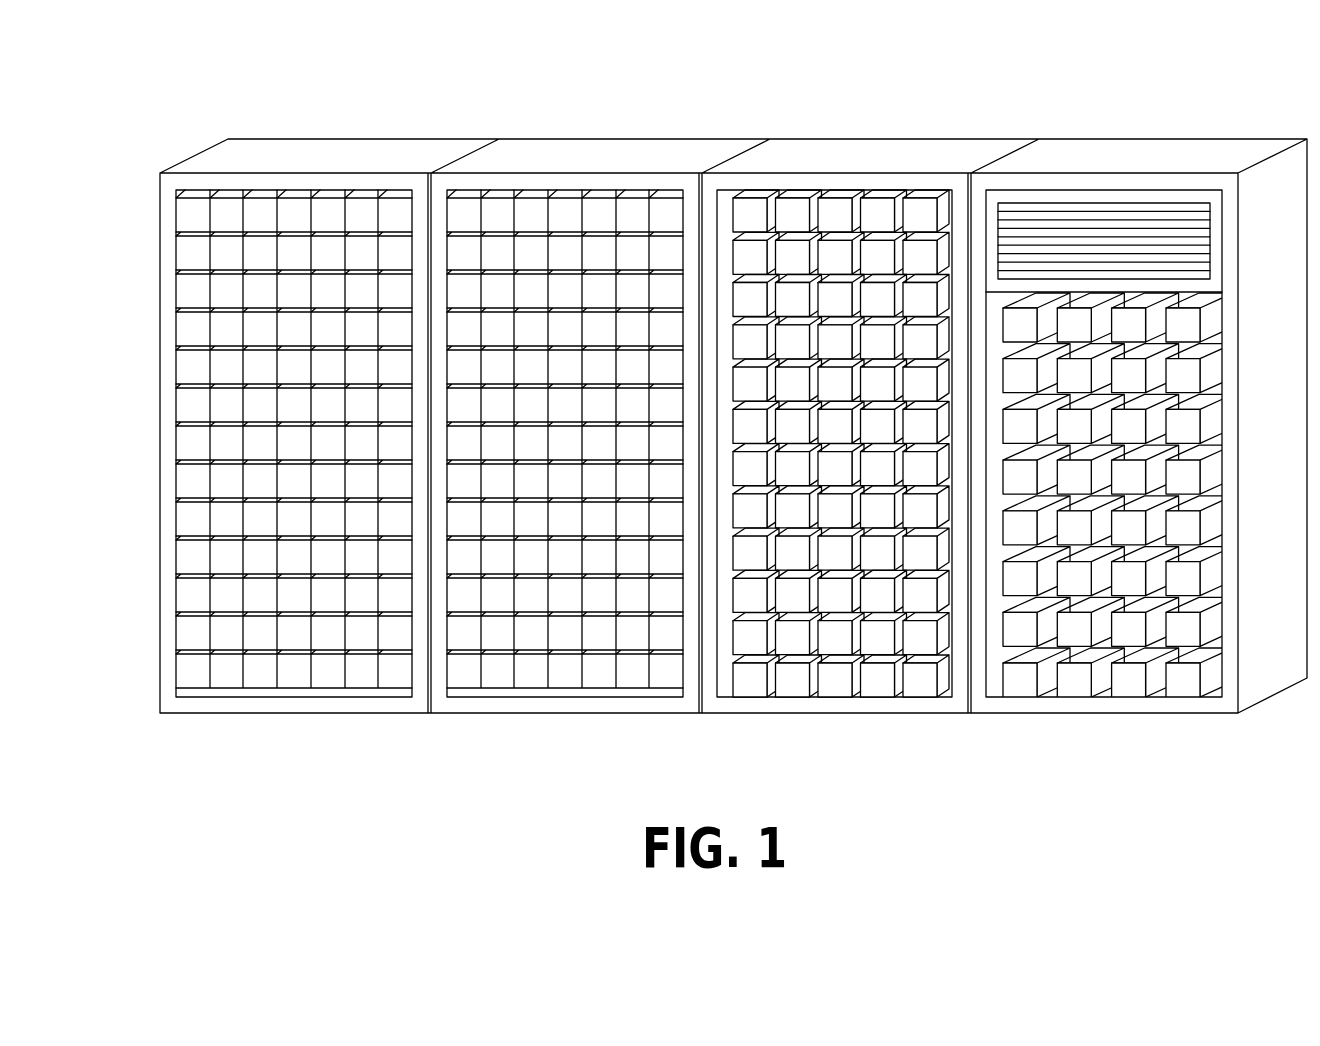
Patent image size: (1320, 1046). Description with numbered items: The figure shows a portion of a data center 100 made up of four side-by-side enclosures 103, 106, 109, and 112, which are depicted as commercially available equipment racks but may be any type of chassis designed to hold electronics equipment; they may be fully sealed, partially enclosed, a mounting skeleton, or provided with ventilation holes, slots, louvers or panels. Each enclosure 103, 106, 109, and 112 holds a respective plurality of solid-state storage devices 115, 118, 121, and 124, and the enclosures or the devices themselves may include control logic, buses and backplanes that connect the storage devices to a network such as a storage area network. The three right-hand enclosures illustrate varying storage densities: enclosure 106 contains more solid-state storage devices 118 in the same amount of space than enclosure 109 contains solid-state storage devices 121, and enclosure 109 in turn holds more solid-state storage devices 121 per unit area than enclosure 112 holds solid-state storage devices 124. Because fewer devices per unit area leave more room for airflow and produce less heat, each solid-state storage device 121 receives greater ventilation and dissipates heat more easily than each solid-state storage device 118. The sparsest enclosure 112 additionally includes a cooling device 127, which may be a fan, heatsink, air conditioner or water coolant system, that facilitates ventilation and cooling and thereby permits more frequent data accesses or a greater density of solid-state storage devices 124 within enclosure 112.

The data center 100 is at (715, 439).
The enclosure 103 is at (267, 426).
The enclosure 106 is at (535, 426).
The enclosure 109 is at (805, 426).
The enclosure 112 is at (1084, 405).
The solid-state storage devices 115 is at (395, 672).
The solid-state storage devices 118 is at (666, 672).
The solid-state storage devices 121 is at (920, 680).
The solid-state storage devices 124 is at (1183, 680).
The cooling device 127 is at (1147, 237).